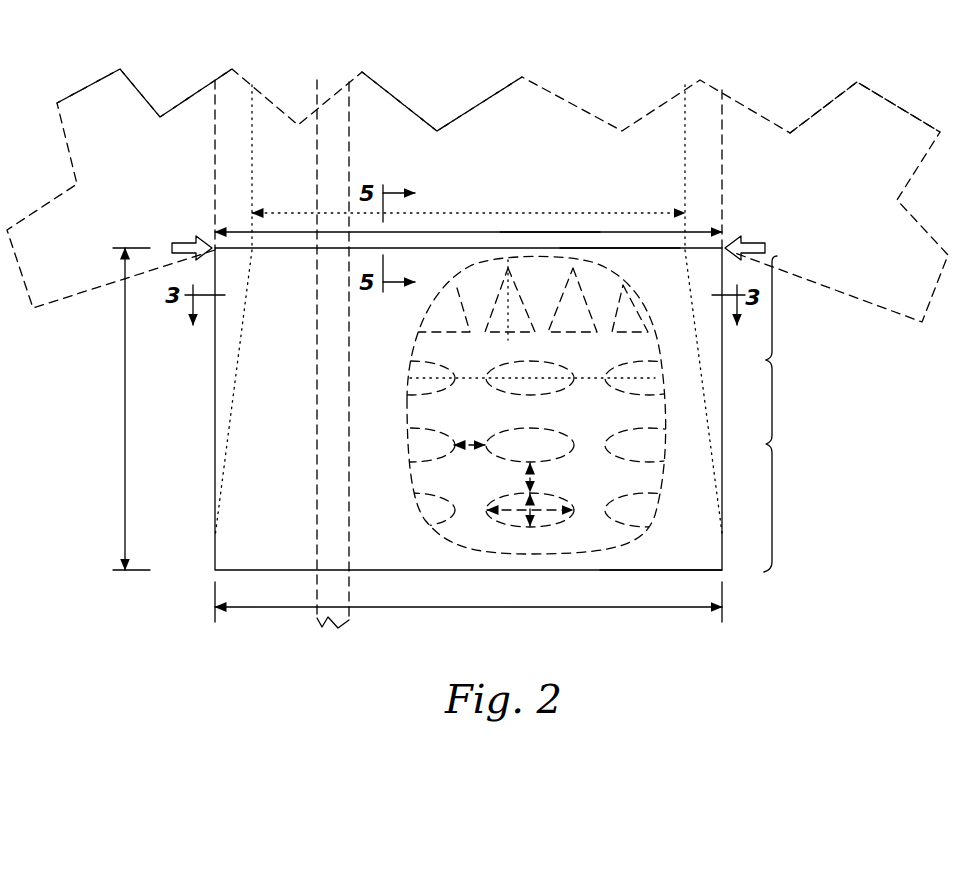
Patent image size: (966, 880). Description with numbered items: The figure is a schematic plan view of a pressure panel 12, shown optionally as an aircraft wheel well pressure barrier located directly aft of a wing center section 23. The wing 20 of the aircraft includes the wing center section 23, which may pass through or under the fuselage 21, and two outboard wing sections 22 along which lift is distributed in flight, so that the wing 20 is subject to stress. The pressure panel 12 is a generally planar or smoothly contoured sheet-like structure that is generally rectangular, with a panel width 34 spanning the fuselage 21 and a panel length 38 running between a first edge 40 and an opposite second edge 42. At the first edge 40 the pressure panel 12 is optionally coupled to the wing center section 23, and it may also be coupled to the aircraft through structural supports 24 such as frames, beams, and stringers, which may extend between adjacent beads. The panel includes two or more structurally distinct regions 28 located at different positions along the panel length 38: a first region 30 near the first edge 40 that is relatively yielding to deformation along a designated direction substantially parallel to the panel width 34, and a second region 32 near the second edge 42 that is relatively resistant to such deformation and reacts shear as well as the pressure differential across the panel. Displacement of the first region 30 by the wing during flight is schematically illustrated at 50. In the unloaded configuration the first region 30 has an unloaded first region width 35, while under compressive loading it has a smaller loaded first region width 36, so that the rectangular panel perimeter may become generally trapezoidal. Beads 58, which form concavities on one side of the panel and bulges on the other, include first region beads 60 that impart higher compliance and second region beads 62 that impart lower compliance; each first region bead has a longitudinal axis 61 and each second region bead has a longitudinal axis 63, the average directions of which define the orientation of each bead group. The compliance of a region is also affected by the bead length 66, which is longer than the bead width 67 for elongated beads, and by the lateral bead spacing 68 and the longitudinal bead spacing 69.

The pressure panel 12 is at (215, 566).
The wing 20 is at (369, 74).
The fuselage 21 is at (252, 148).
The outboard wing sections 22 is at (147, 97).
The wing center section 23 is at (410, 107).
The structural supports 24 is at (317, 620).
The structurally distinct regions 28 is at (802, 343).
The first region 30 is at (775, 312).
The second region 32 is at (775, 443).
The panel width 34 is at (500, 232).
The unloaded first region width 35 is at (580, 232).
The loaded first region width 36 is at (480, 213).
The panel length 38 is at (125, 432).
The first edge 40 is at (622, 248).
The second edge 42 is at (670, 572).
The displacement by the wing 50 is at (198, 240).
The beads 58 is at (592, 262).
The first region beads 60 is at (592, 305).
The longitudinal axis 61 is at (508, 310).
The second region beads 62 is at (645, 432).
The longitudinal axis 63 is at (427, 368).
The bead length 66 is at (510, 515).
The bead width 67 is at (535, 515).
The lateral bead spacing 68 is at (528, 478).
The longitudinal bead spacing 69 is at (466, 447).